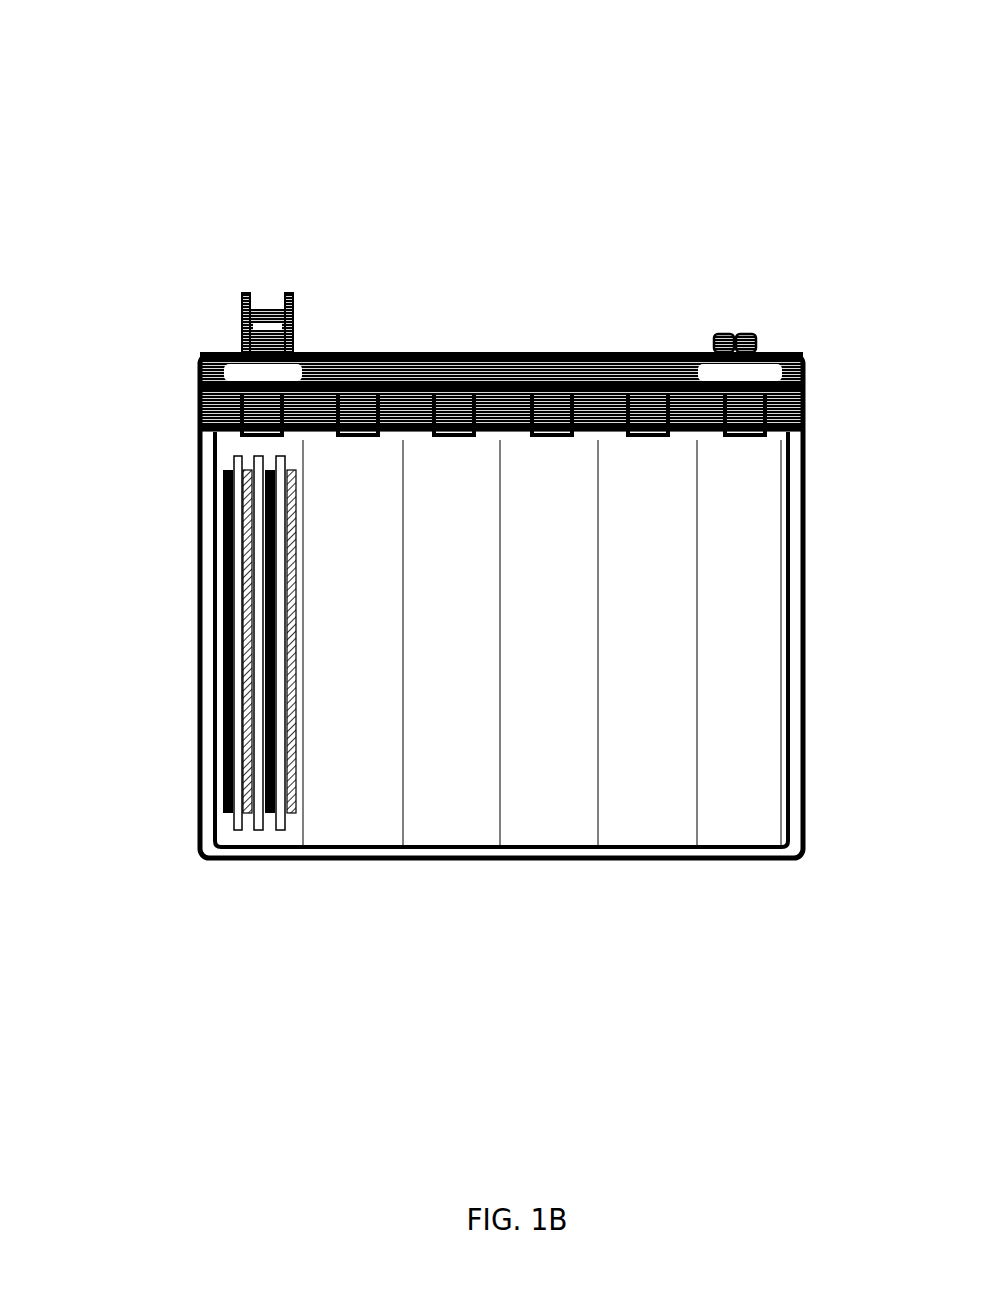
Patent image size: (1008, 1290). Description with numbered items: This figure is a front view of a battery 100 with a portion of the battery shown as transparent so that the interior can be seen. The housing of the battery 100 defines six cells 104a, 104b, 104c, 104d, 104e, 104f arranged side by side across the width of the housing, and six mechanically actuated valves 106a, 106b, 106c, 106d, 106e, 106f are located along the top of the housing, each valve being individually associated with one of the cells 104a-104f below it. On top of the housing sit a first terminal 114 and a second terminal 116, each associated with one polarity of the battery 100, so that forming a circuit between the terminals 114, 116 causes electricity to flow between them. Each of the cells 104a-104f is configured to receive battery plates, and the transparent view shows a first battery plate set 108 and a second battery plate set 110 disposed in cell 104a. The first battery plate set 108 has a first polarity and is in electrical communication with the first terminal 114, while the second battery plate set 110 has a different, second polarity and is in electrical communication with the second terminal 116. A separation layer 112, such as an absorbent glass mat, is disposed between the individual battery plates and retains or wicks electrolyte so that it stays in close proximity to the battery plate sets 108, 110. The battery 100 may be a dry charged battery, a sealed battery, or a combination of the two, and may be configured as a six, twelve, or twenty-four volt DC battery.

The battery 100 is at (352, 104).
The cell 104a is at (260, 840).
The cell 104b is at (352, 840).
The cell 104c is at (450, 840).
The cell 104d is at (548, 840).
The cell 104e is at (648, 840).
The cell 104f is at (742, 840).
The mechanically actuated valve 106a is at (262, 412).
The mechanically actuated valve 106b is at (358, 412).
The mechanically actuated valve 106c is at (454, 412).
The mechanically actuated valve 106d is at (552, 412).
The mechanically actuated valve 106e is at (648, 412).
The mechanically actuated valve 106f is at (745, 412).
The first battery plate set 108 is at (228, 474).
The second battery plate set 110 is at (247, 470).
The separation layer 112 is at (238, 832).
The first terminal 114 is at (291, 292).
The second terminal 116 is at (745, 338).